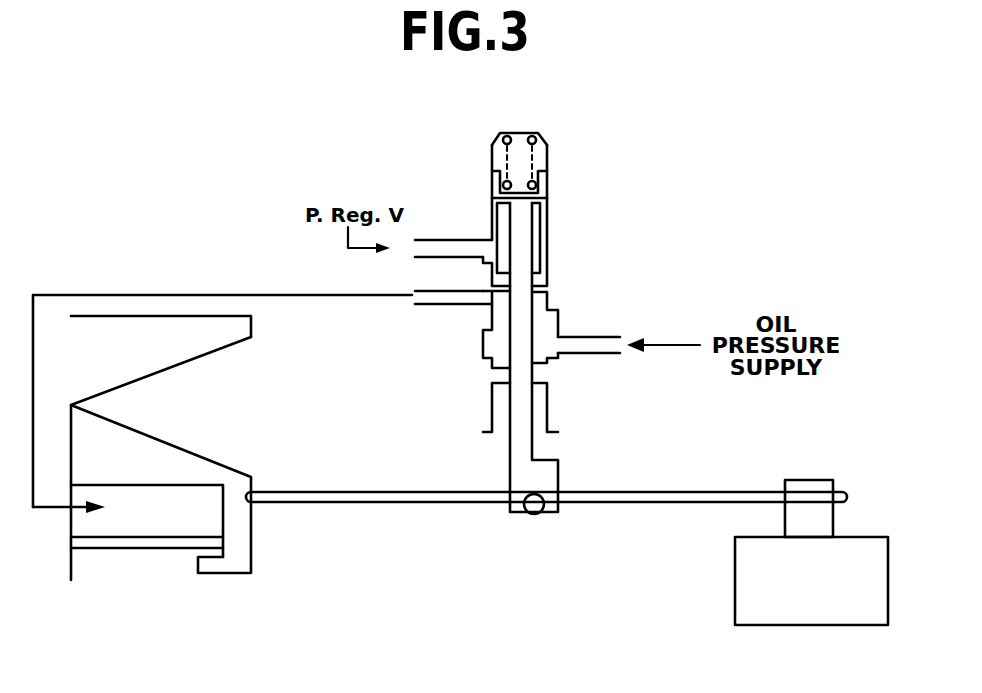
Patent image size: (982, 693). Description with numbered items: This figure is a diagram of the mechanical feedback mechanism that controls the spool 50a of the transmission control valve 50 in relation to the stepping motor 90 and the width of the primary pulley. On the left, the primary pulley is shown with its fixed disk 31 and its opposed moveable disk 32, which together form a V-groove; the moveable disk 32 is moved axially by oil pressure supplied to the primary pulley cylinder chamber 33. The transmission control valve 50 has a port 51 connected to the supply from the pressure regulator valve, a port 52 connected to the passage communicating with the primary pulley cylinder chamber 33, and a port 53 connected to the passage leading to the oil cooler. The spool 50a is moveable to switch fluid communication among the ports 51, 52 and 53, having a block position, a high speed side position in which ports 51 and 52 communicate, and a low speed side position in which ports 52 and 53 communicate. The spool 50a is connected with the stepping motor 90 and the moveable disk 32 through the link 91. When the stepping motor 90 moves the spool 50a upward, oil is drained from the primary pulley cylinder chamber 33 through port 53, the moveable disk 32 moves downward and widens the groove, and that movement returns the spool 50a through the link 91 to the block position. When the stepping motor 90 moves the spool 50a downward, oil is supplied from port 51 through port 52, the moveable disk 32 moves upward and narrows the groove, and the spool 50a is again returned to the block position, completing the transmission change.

The fixed disk 31 is at (233, 330).
The moveable disk 32 is at (190, 453).
The primary pulley cylinder chamber 33 is at (168, 502).
The transmission control valve 50 is at (558, 155).
The spool 50a is at (520, 217).
The port 51 is at (488, 243).
The port 52 is at (488, 306).
The port 53 is at (555, 336).
The stepping motor 90 is at (855, 537).
The link 91 is at (660, 492).